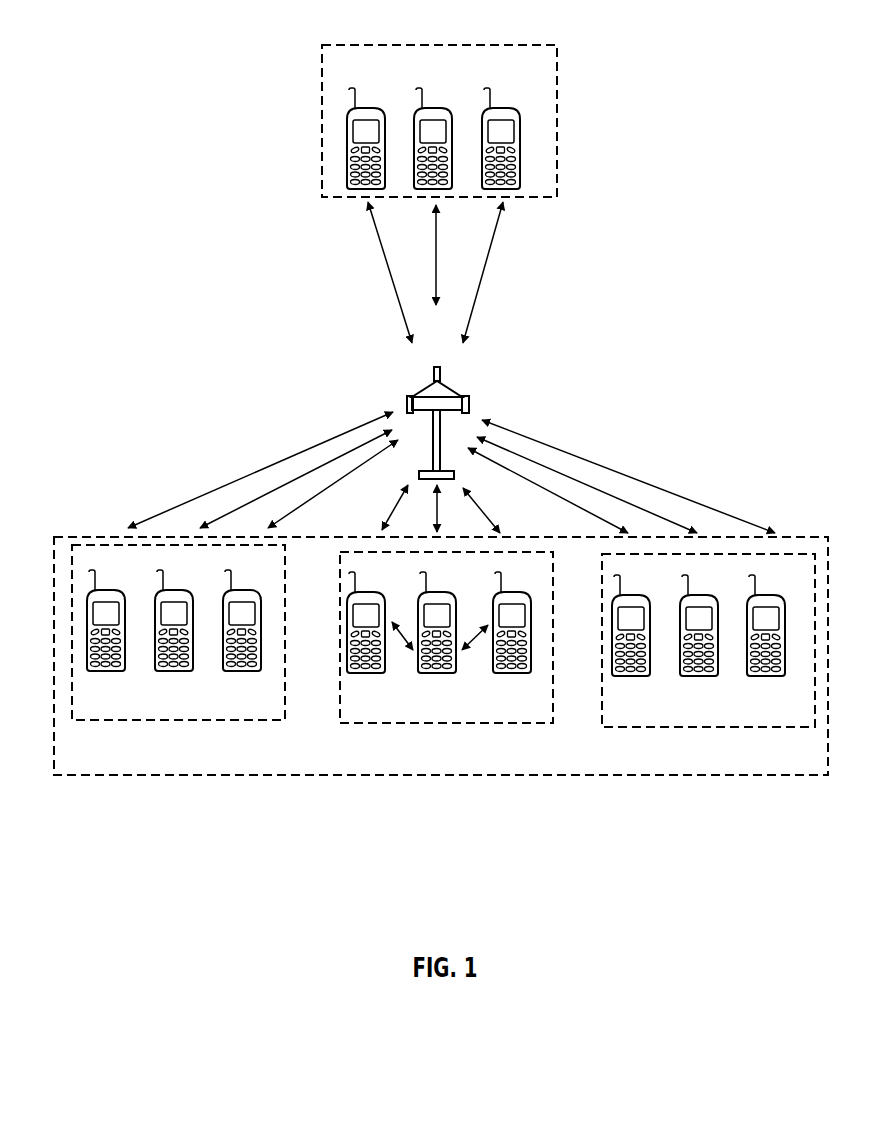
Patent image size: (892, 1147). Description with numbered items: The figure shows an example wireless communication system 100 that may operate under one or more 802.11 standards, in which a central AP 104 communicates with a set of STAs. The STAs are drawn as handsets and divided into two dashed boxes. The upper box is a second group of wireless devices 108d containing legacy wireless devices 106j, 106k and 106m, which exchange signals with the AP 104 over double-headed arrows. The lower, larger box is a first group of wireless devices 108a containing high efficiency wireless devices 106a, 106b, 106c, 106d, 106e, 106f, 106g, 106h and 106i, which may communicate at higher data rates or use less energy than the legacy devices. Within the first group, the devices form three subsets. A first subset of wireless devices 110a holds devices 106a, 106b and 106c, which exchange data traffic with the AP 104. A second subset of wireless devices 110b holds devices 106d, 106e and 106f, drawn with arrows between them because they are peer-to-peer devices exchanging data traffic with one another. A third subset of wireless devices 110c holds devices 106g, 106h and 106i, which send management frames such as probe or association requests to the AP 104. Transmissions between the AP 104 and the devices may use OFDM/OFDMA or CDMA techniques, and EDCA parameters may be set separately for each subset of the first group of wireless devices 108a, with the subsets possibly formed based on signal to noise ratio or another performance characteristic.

The wireless communication system 100 is at (690, 129).
The AP 104 is at (436, 365).
The wireless device 106a is at (110, 588).
The wireless device 106b is at (178, 588).
The wireless device 106c is at (246, 588).
The wireless device 106d is at (370, 590).
The wireless device 106e is at (441, 590).
The wireless device 106f is at (518, 590).
The wireless device 106g is at (634, 593).
The wireless device 106h is at (702, 593).
The wireless device 106i is at (770, 593).
The wireless device 106j is at (371, 106).
The wireless device 106k is at (438, 106).
The wireless device 106m is at (502, 106).
The first group of wireless devices 108a is at (260, 776).
The second group of wireless devices 108d is at (545, 197).
The subset of wireless devices 110a is at (208, 722).
The subset of wireless devices 110b is at (463, 724).
The subset of wireless devices 110c is at (722, 728).